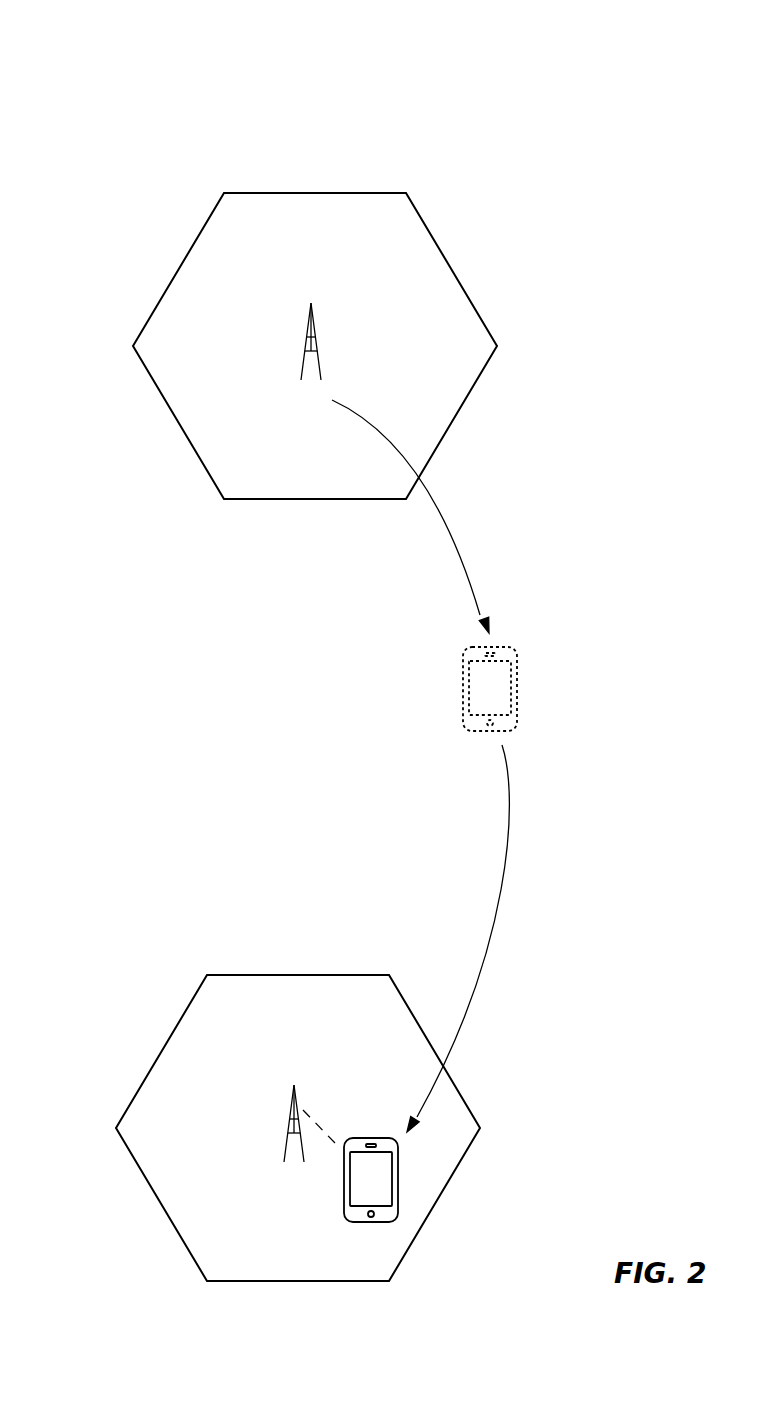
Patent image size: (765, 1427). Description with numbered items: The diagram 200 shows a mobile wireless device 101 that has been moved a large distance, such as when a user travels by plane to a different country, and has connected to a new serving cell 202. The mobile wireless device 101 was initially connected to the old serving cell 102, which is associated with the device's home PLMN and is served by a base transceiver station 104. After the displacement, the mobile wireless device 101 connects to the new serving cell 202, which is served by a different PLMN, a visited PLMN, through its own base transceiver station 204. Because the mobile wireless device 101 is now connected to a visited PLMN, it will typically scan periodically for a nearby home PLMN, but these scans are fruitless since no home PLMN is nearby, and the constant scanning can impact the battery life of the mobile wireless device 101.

The diagram 200 is at (117, 69).
The old serving cell 102 is at (192, 216).
The base transceiver station 104 is at (325, 303).
The new serving cell 202 is at (177, 996).
The base transceiver station 204 is at (306, 1087).
The mobile wireless device 101 is at (408, 1167).